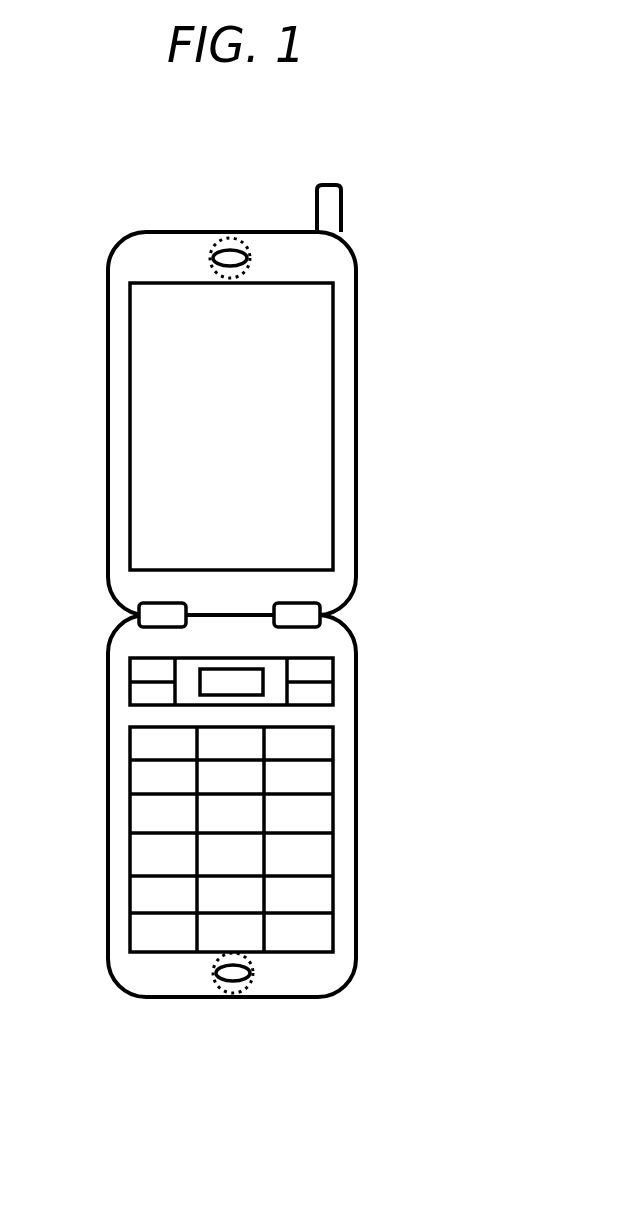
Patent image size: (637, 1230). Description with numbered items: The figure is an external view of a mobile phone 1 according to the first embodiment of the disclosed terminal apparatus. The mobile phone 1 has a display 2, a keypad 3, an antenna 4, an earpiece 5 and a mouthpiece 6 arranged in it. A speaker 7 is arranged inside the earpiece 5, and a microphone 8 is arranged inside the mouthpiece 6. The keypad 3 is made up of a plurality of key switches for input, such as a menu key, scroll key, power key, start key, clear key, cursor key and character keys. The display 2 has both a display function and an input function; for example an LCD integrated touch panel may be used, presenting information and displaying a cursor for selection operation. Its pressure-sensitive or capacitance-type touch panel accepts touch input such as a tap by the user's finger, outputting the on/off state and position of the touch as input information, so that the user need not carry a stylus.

The mobile phone 1 is at (424, 171).
The display 2 is at (335, 510).
The keypad 3 is at (336, 958).
The antenna 4 is at (341, 217).
The earpiece 5 is at (210, 257).
The mouthpiece 6 is at (245, 978).
The speaker 7 is at (227, 240).
The microphone 8 is at (236, 1000).